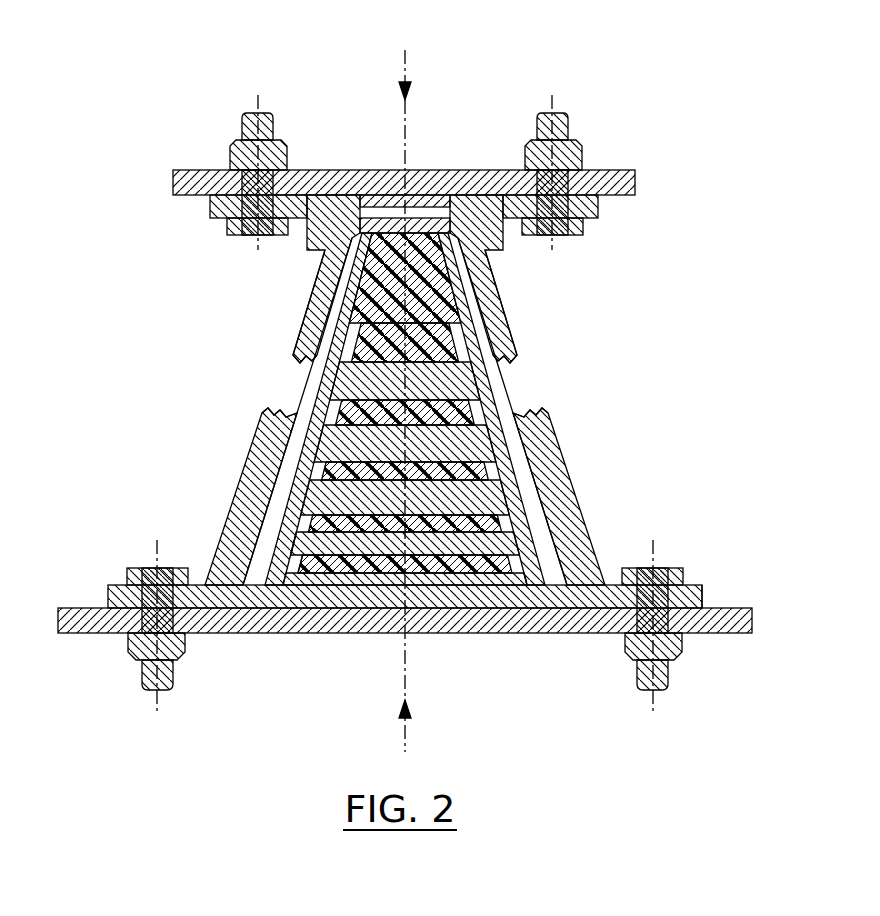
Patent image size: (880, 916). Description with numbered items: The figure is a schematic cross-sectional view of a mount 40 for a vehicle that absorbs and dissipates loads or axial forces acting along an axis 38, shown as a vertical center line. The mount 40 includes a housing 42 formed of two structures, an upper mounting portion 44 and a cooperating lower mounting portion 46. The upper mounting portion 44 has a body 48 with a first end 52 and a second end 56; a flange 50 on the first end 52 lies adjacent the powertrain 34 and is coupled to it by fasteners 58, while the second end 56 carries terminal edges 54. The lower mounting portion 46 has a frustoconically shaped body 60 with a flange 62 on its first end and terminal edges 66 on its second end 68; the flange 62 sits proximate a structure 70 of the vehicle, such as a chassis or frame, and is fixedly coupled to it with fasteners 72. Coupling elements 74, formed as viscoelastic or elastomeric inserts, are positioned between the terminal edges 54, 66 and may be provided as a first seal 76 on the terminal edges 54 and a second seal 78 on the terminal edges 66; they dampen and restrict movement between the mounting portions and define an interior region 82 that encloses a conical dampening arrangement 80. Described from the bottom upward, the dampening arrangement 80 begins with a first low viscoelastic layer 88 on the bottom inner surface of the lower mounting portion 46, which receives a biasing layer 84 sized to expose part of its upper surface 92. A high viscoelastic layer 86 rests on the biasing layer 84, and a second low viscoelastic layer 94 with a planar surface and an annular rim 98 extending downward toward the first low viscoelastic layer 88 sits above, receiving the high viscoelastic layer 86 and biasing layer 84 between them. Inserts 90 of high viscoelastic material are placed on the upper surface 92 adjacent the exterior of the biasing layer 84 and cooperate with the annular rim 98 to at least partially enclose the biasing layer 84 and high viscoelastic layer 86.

The powertrain 34 is at (200, 170).
The axis 38 is at (412, 60).
The mount assembly 40 is at (606, 128).
The housing 42 is at (484, 294).
The upper mounting portion 44 is at (206, 235).
The lower mounting portion 46 is at (108, 588).
The body 48 is at (478, 208).
The flange 50 is at (592, 210).
The first end 52 is at (213, 206).
The terminal edges 54 is at (305, 352).
The second end 56 is at (318, 320).
The fasteners 58 is at (247, 136).
The body 60 is at (578, 565).
The flange 62 is at (700, 598).
The terminal edges 66 is at (270, 425).
The second end 68 is at (262, 478).
The structure 70 is at (530, 634).
The fasteners 72 is at (140, 658).
The coupling elements 74 is at (558, 453).
The first seal 76 is at (530, 400).
The second seal 78 is at (565, 480).
The dampening arrangement 80 is at (393, 293).
The interior region 82 is at (578, 535).
The biasing layer 84 is at (458, 362).
The high viscoelastic layer 86 is at (458, 343).
The low viscoelastic layer 88 is at (462, 318).
The inserts 90 is at (300, 548).
The upper surface 92 is at (360, 600).
The second low viscoelastic layer 94 is at (320, 600).
The annular rim 98 is at (540, 578).